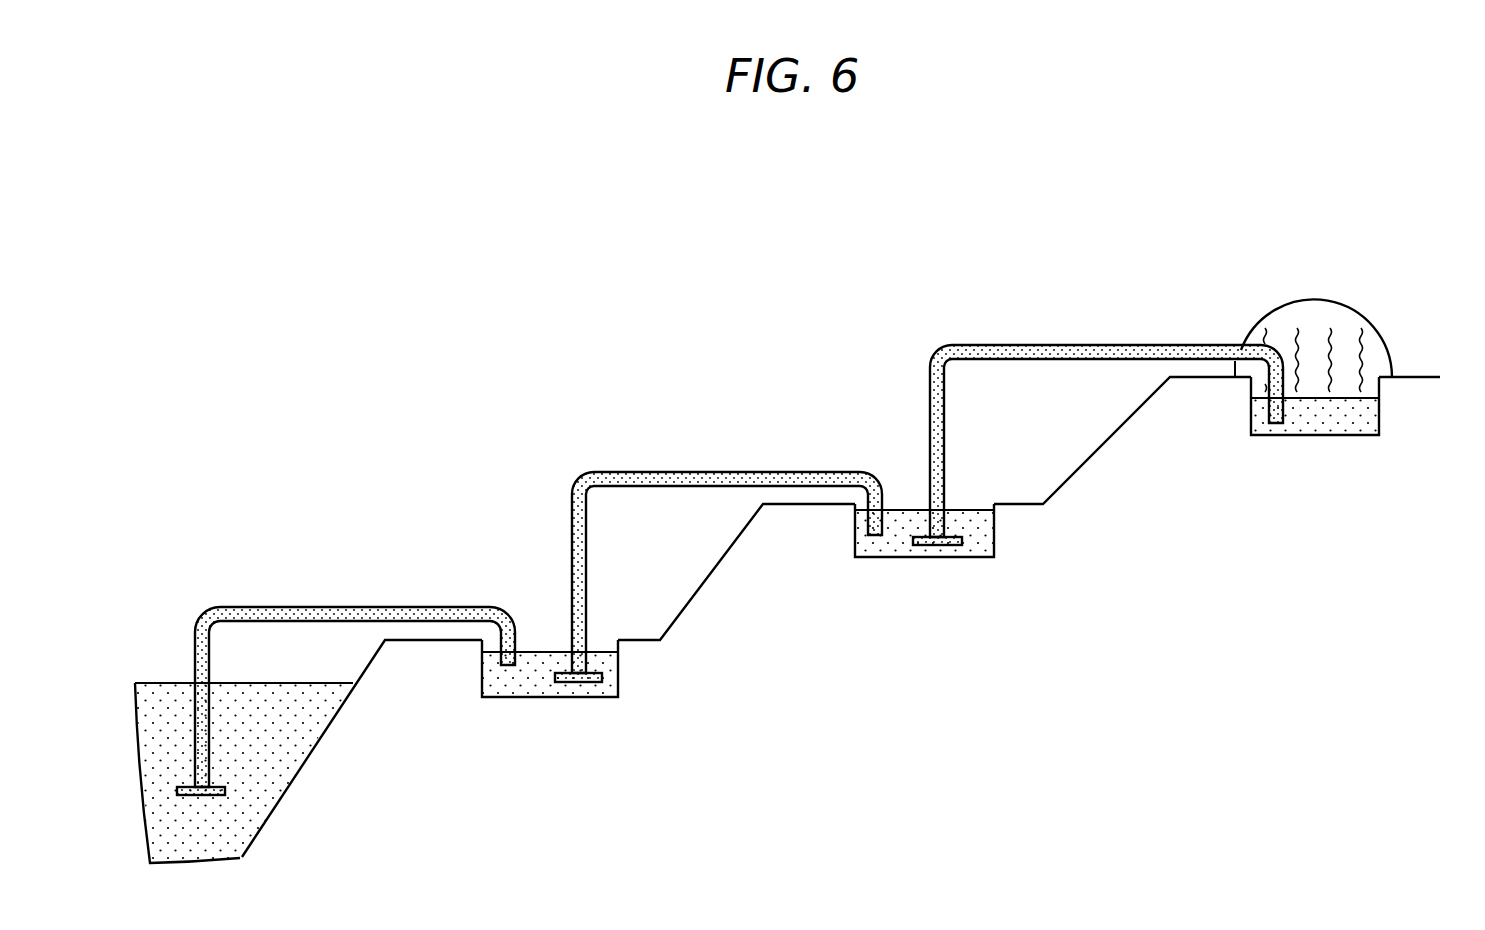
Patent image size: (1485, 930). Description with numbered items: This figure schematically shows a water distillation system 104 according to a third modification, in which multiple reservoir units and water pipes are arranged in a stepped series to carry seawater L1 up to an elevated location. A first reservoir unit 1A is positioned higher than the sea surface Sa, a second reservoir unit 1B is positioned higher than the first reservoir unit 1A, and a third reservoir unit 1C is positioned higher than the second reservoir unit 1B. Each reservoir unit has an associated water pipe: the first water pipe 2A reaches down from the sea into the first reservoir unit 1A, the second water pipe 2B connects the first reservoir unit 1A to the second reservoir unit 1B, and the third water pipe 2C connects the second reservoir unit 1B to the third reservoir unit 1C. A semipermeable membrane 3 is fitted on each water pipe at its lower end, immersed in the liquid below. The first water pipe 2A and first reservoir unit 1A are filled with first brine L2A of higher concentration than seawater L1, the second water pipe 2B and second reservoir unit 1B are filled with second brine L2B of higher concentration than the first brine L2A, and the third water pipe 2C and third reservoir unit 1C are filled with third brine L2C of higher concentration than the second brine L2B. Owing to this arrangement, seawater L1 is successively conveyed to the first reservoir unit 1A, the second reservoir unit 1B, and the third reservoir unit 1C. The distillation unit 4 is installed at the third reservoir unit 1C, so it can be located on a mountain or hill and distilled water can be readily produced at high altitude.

The water distillation system 104 is at (898, 258).
The distillation unit 4 is at (1381, 322).
The first water pipe 2A is at (296, 607).
The second water pipe 2B is at (697, 471).
The third water pipe 2C is at (1095, 344).
The first reservoir unit 1A is at (611, 699).
The second reservoir unit 1B is at (985, 559).
The third reservoir unit 1C is at (1369, 437).
The seawater L1 is at (290, 752).
The first brine L2A is at (513, 680).
The second brine L2B is at (880, 548).
The third brine L2C is at (1298, 423).
The sea surface Sa is at (160, 682).
The semipermeable membrane 3 is at (207, 797).